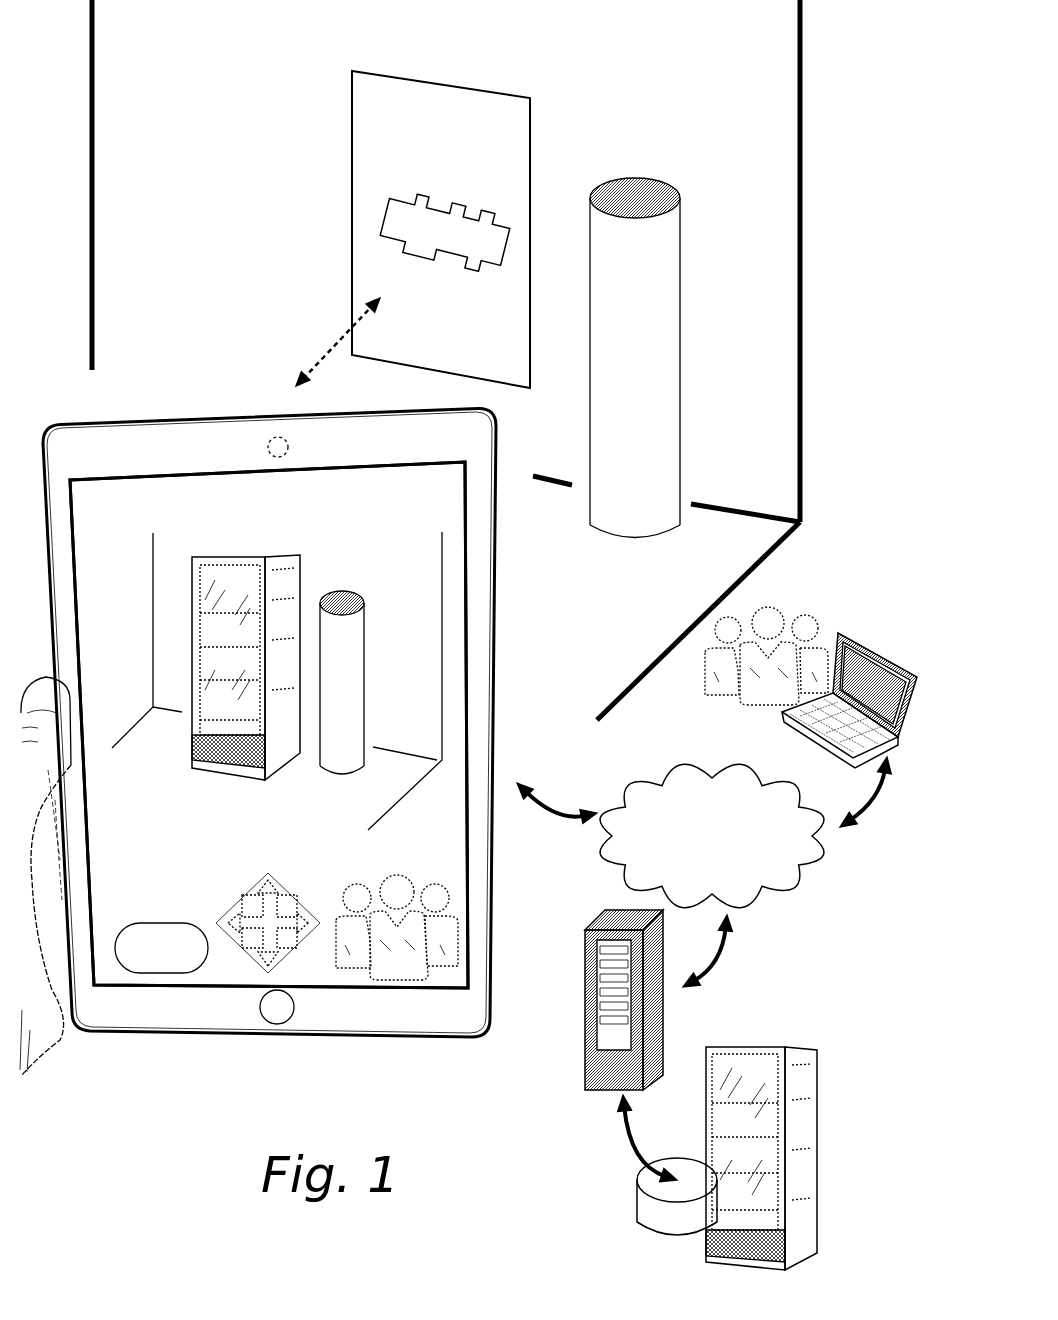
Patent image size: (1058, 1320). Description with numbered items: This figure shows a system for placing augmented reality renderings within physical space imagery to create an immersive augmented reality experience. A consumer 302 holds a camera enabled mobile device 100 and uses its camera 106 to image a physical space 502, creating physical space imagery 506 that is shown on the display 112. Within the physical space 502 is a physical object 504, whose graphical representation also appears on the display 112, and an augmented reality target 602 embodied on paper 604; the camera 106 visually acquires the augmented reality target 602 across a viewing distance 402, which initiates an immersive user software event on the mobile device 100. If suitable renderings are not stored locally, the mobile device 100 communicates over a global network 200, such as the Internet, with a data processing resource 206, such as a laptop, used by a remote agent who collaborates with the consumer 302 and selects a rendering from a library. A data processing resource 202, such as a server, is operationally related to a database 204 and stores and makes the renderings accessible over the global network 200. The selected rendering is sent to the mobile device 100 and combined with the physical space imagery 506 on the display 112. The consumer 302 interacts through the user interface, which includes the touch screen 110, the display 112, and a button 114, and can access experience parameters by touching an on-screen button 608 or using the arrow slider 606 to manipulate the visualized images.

The camera enabled mobile device 100 is at (494, 570).
The camera 106 is at (268, 440).
The touch screen 110 is at (468, 600).
The display 112 is at (338, 725).
The button 114 is at (277, 1008).
The global network 200 is at (704, 872).
The data processing resource 202 is at (584, 1078).
The database 204 is at (647, 1202).
The data processing resource 206 is at (853, 657).
The consumer 302 is at (47, 1033).
The distance between device and target 402 is at (341, 336).
The physical space 502 is at (800, 93).
The physical object 504 is at (670, 274).
The physical space imagery 506 is at (277, 678).
The augmented reality target 602 is at (387, 228).
The paper 604 is at (520, 115).
The arrow slider 606 is at (303, 933).
The button 608 is at (161, 948).